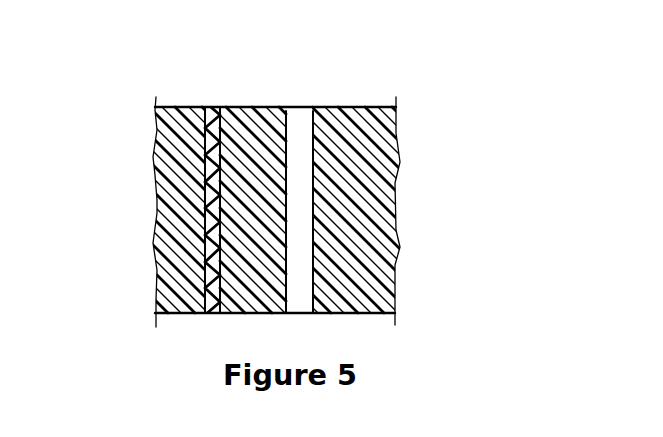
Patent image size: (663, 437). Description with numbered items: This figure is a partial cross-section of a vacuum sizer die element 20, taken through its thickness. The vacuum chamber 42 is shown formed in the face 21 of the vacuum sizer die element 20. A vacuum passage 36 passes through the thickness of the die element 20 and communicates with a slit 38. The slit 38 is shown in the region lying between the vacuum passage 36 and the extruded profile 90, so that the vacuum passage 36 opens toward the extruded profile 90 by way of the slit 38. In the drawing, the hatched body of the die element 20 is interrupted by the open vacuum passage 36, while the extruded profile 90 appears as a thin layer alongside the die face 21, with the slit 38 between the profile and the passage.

The vacuum sizer die element 20 is at (358, 208).
The face 21 is at (184, 102).
The vacuum passage 36 is at (297, 178).
The slit 38 is at (237, 152).
The vacuum chamber 42 is at (313, 107).
The extruded profile 90 is at (213, 107).